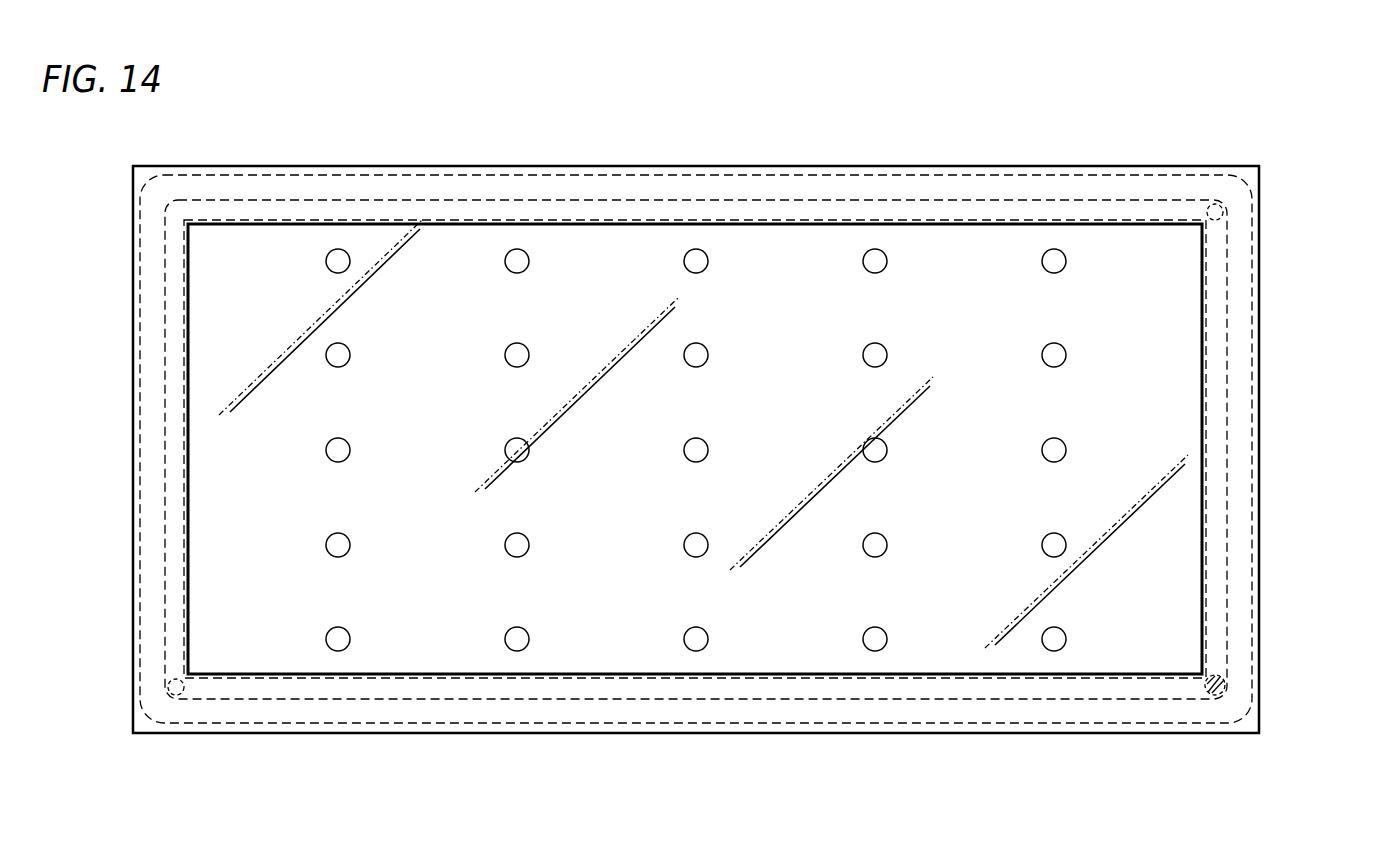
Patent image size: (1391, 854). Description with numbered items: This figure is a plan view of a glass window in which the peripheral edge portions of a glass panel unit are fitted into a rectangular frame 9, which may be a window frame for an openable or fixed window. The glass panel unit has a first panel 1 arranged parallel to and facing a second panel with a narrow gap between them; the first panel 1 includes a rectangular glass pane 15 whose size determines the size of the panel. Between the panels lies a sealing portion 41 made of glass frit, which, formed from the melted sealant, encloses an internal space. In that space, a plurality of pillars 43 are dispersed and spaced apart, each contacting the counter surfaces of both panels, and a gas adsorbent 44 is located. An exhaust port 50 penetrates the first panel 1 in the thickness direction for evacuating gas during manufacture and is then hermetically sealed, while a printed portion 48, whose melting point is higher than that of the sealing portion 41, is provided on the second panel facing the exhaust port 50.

The first panel 1 is at (272, 260).
The frame 9 is at (847, 182).
The glass pane 15 is at (475, 243).
The sealing portion 41 is at (1243, 319).
The pillars 43 is at (518, 262).
The gas adsorbent 44 is at (1222, 215).
The printed portion 48 is at (1212, 416).
The exhaust port 50 is at (1228, 684).